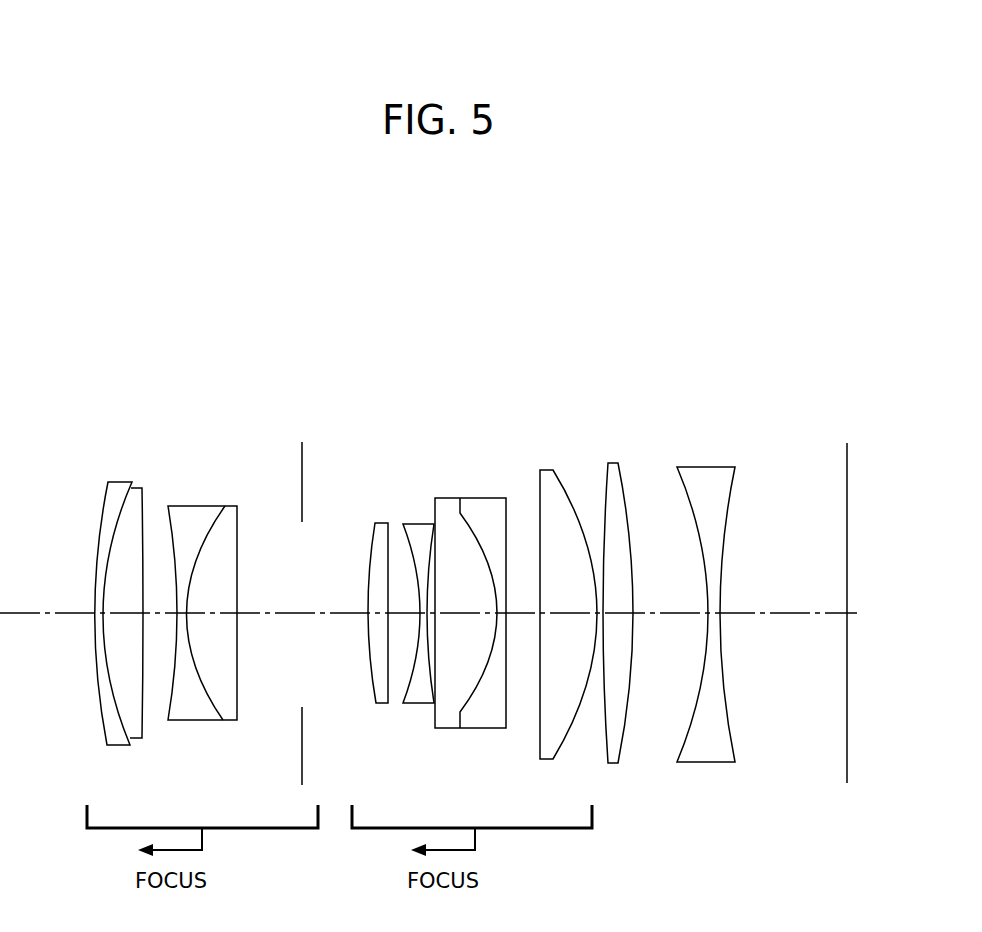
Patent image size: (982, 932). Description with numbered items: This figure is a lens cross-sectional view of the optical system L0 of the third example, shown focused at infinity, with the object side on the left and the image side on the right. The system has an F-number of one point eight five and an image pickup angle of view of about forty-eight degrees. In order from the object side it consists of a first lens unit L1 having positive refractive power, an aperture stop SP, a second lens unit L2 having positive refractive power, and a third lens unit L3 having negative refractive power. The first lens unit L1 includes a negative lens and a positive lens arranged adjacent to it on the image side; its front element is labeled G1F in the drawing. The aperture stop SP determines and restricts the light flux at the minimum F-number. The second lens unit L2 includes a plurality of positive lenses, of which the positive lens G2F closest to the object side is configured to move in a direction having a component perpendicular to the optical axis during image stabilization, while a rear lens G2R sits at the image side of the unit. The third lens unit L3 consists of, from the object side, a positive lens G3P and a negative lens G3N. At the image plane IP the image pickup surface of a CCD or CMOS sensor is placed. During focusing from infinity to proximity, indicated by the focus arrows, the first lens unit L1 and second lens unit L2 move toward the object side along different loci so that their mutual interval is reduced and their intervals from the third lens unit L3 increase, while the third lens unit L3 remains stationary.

The optical system L0 is at (747, 335).
The first lens unit L1 is at (262, 403).
The second lens unit L2 is at (572, 403).
The third lens unit L3 is at (743, 403).
The focus lens subunit of first lens unit G1F is at (118, 488).
The positive lens G2F is at (382, 528).
The rear lens subunit of second lens unit G2R is at (548, 475).
The positive lens G3P is at (615, 473).
The negative lens G3N is at (715, 472).
The aperture stop SP is at (302, 752).
The image plane IP is at (847, 535).